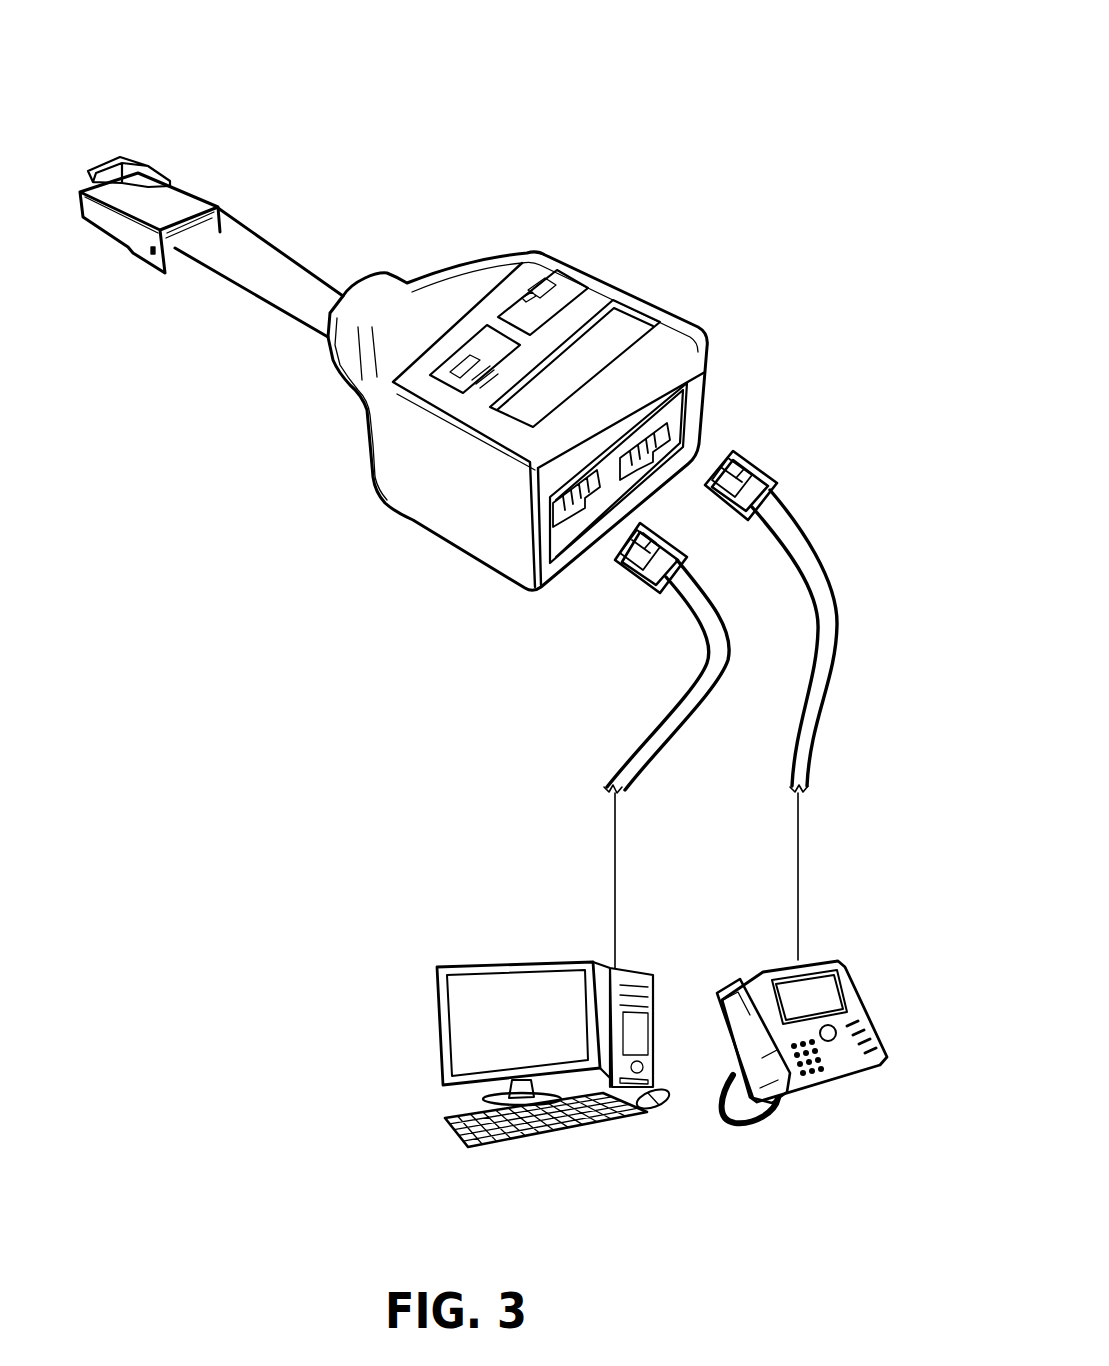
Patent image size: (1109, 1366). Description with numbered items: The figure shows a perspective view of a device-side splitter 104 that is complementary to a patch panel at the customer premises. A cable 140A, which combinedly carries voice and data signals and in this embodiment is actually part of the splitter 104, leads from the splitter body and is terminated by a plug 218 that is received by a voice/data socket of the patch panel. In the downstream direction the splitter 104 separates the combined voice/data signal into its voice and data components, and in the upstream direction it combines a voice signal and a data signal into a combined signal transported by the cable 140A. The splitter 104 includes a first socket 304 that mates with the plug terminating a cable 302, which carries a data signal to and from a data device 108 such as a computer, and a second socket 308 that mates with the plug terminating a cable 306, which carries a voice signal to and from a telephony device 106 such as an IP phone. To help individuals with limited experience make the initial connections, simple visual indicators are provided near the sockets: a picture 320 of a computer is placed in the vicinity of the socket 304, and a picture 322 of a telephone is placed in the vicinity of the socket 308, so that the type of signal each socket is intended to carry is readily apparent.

The device-side splitter 104 is at (560, 80).
The plug 218 is at (176, 204).
The cable 140A is at (262, 272).
The picture of a computer 320 is at (433, 371).
The picture of a telephone 322 is at (572, 282).
The first socket 304 is at (595, 489).
The second socket 308 is at (668, 427).
The cable 302 is at (672, 713).
The cable 306 is at (812, 716).
The data device 108 is at (477, 990).
The telephony device 106 is at (813, 990).